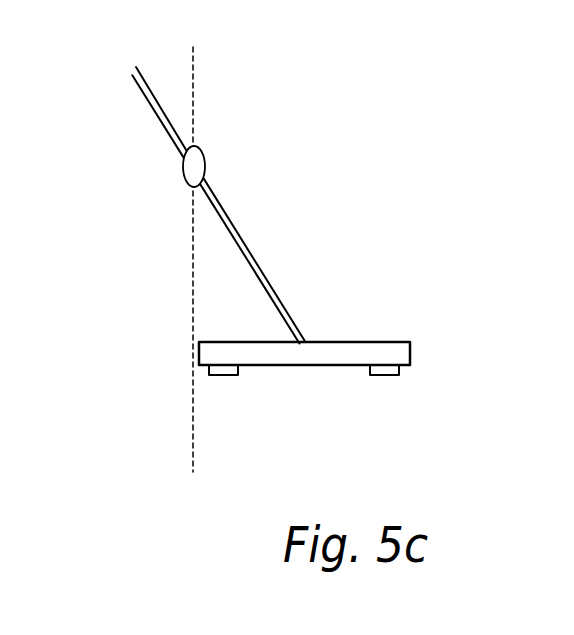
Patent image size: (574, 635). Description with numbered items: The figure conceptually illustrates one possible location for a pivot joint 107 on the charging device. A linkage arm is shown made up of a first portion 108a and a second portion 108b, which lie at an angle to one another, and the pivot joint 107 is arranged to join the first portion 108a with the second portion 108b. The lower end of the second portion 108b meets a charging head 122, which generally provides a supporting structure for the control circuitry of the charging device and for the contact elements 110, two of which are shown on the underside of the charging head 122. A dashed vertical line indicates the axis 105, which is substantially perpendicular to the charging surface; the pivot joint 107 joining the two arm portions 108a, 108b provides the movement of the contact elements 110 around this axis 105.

The axis 105 is at (192, 92).
The pivot joint 107 is at (183, 171).
The first portion 108a is at (142, 95).
The second portion 108b is at (240, 228).
The contact element 110 is at (223, 375).
The charging head 122 is at (198, 357).